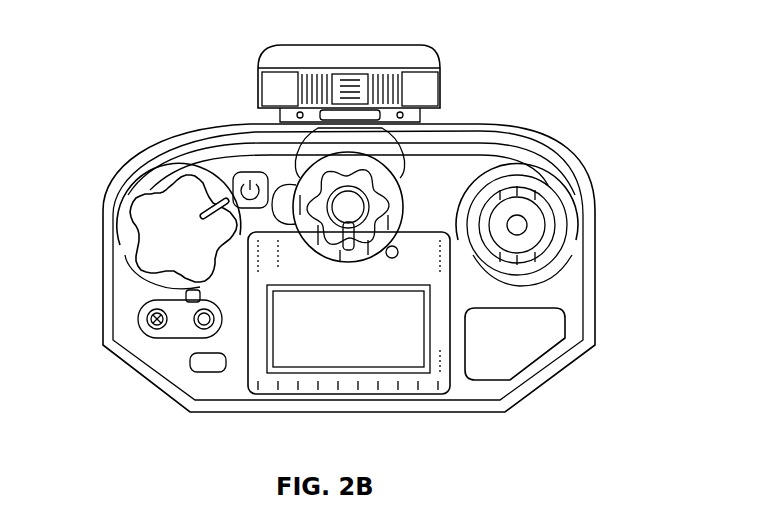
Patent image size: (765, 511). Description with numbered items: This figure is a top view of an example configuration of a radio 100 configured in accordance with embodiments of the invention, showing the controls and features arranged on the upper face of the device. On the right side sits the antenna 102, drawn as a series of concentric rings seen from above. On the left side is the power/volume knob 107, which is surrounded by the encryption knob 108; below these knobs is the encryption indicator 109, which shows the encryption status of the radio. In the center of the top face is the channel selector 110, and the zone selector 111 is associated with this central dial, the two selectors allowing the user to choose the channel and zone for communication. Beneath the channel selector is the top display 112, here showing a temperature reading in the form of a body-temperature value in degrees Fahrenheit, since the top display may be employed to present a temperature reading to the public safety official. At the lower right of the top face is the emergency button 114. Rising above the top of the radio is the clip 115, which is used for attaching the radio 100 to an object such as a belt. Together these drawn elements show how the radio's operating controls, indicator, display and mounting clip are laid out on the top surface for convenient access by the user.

The radio 100 is at (602, 38).
The antenna 102 is at (528, 226).
The power/volume knob 107 is at (140, 215).
The encryption knob 108 is at (200, 165).
The encryption indicator 109 is at (157, 322).
The channel selector 110 is at (398, 198).
The zone selector 111 is at (375, 208).
The top display 112 is at (405, 396).
The emergency button 114 is at (527, 352).
The clip 115 is at (262, 46).